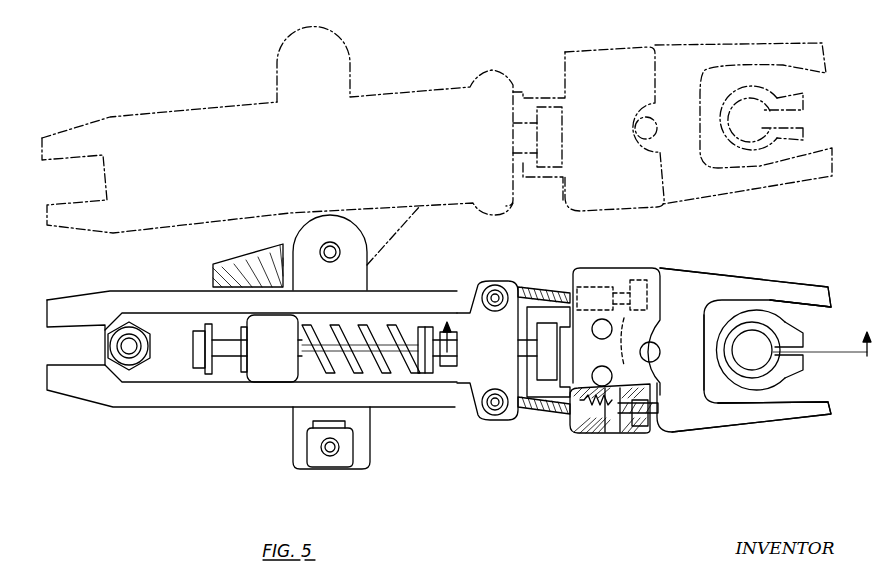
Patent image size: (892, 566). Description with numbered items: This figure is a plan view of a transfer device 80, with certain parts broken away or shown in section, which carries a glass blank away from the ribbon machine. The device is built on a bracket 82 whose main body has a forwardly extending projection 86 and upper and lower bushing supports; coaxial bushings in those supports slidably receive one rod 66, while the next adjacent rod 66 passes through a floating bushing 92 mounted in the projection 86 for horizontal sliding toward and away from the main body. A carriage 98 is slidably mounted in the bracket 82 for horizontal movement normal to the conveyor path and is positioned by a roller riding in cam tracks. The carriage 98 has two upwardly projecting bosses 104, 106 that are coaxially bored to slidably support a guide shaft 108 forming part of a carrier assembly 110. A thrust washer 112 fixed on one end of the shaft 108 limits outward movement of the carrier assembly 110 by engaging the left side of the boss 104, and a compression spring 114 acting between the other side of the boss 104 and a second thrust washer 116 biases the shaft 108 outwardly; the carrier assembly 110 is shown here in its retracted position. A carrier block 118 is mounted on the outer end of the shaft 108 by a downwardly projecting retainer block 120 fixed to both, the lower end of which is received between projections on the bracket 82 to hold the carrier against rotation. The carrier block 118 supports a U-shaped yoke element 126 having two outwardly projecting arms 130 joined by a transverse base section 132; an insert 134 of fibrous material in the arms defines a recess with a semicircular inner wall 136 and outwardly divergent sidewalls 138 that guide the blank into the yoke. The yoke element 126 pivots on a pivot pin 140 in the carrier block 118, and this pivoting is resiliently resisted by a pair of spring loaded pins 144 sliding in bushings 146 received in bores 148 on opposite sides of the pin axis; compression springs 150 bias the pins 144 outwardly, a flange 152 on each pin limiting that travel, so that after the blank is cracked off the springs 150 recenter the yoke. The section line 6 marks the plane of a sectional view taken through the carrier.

The section line 6- 6 is at (656, 327).
The rod 66 is at (330, 243).
The transfer device 80 is at (393, 90).
The bracket 82 is at (228, 394).
The projection 86 is at (293, 456).
The floating bushing 92 is at (315, 466).
The carriage 98 is at (377, 374).
The boss 104 is at (280, 352).
The boss 106 is at (477, 372).
The guide shaft 108 is at (350, 338).
The carrier assembly 110 is at (603, 260).
The thrust washer 112 is at (196, 338).
The compression spring 114 is at (397, 340).
The second thrust washer 116 is at (458, 338).
The carrier block 118 is at (580, 393).
The retainer block 120 is at (560, 331).
The yoke element 126 is at (689, 421).
The arms 130 is at (776, 290).
The base section 132 is at (672, 329).
The insert 134 is at (774, 309).
The semicircular inner wall 136 is at (727, 364).
The outwardly divergent sidewalls 138 is at (822, 308).
The pivot pin 140 is at (660, 357).
The spring loaded pins 144 is at (642, 280).
The bushings 146 is at (633, 432).
The bores 148 is at (607, 431).
The compression springs 150 is at (589, 393).
The flange 152 is at (612, 359).